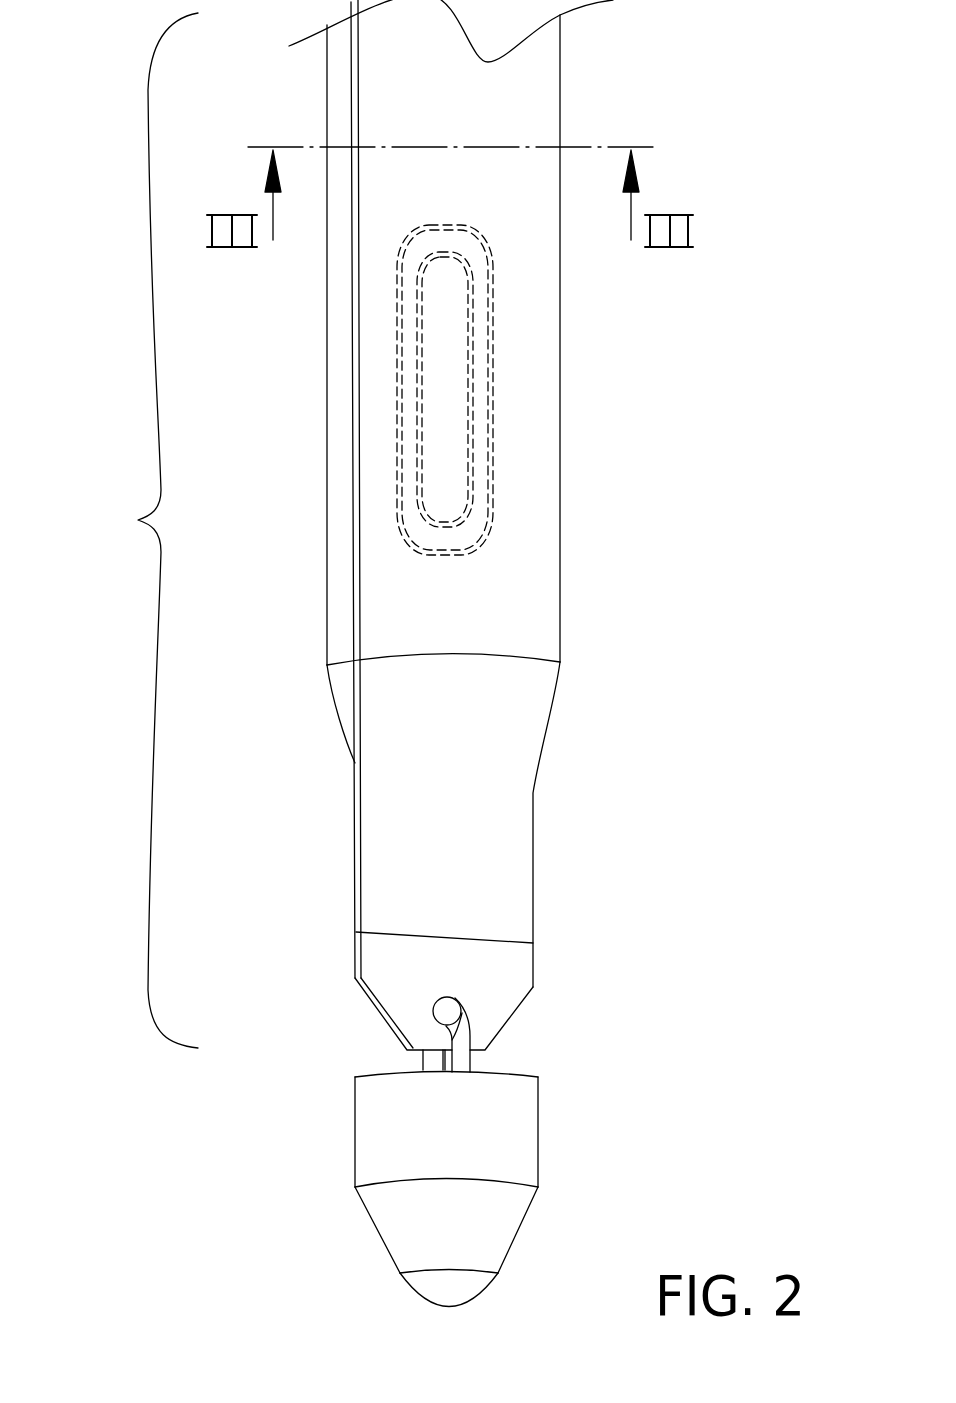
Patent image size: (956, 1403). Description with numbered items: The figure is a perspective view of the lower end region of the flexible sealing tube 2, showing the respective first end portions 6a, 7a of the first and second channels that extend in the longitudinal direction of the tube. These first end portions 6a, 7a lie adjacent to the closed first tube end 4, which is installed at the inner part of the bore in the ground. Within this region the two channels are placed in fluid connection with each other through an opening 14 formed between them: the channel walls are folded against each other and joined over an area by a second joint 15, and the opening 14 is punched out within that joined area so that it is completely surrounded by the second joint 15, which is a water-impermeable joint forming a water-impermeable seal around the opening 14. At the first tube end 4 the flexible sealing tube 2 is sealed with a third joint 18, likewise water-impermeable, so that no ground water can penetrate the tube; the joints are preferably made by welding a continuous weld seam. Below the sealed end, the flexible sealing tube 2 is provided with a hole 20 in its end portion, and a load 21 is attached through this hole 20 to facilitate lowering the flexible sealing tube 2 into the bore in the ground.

The flexible sealing tube 2 is at (561, 559).
The first tube end 4 is at (463, 843).
The first end portion of the first channel 6a is at (132, 530).
The first end portion of the second channel 7a is at (132, 530).
The opening 14 is at (445, 387).
The second joint 15 is at (480, 418).
The third joint 18 is at (447, 933).
The hole 20 is at (447, 1006).
The load 21 is at (538, 1132).